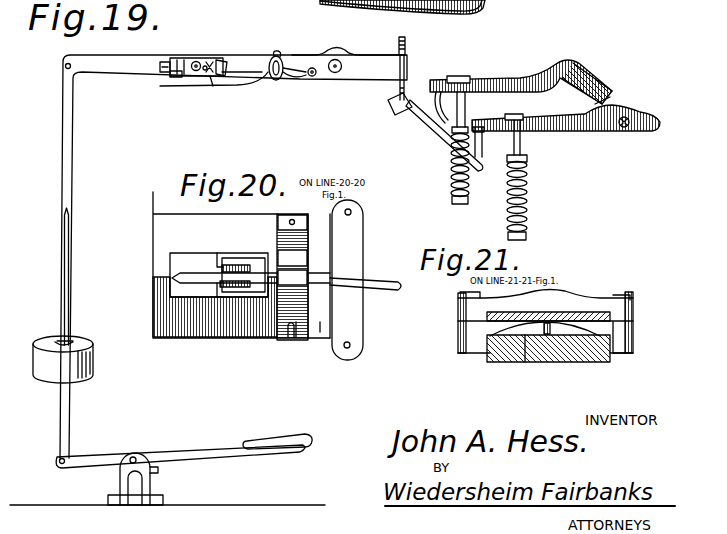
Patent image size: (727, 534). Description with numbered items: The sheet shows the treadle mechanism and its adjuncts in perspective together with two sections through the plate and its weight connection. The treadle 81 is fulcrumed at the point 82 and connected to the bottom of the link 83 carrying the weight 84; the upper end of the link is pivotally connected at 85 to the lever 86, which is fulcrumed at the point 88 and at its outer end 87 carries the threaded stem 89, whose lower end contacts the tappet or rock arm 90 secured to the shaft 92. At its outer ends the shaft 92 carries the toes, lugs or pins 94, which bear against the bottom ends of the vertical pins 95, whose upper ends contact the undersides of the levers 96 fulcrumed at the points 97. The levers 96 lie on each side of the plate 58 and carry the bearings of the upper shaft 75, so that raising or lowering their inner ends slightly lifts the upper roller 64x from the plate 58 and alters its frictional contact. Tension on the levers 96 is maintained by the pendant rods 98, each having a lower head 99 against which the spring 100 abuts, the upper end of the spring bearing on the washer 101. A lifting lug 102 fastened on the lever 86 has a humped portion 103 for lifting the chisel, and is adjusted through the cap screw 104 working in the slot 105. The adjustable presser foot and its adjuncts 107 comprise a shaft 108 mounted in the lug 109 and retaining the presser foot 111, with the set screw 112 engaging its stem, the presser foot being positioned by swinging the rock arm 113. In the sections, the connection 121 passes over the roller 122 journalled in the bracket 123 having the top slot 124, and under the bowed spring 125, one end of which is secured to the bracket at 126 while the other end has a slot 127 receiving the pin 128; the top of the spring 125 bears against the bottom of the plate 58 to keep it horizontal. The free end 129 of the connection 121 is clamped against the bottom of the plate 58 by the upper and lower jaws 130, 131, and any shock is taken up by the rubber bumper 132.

In FIG. 21, the plate 58 is at (587, 317).
In FIG. 19, the upper roller 64x is at (608, 97).
In FIG. 19, the upper shaft 75 is at (626, 128).
In FIG. 19, the treadle 81 is at (207, 438).
In FIG. 19, the fulcrum point 82 is at (140, 440).
In FIG. 19, the link 83 is at (62, 248).
In FIG. 19, the weight 84 is at (93, 355).
In FIG. 19, the pivotal connection 85 is at (63, 70).
In FIG. 19, the lever 86 is at (215, 60).
In FIG. 19, the outer end of lever 87 is at (400, 54).
In FIG. 19, the fulcrum point of lever 88 is at (337, 73).
In FIG. 19, the threaded stem 89 is at (407, 86).
In FIG. 19, the tappet or rock arm 90 is at (410, 106).
In FIG. 19, the shaft 92 is at (446, 140).
In FIG. 19, the toes, lugs or pins 94 is at (447, 150).
In FIG. 19, the vertical pins 95 is at (479, 62).
In FIG. 19, the levers 96 is at (537, 62).
In FIG. 19, the fulcrum points of levers 97 is at (603, 99).
In FIG. 19, the pendant rods 98 is at (466, 104).
In FIG. 19, the head 99 is at (452, 200).
In FIG. 19, the spring 100 is at (450, 180).
In FIG. 19, the washer 101 is at (528, 161).
In FIG. 19, the lifting lug 102 is at (313, 77).
In FIG. 19, the humped portion 103 is at (303, 56).
In FIG. 19, the cap screw 104 is at (291, 74).
In FIG. 19, the slot 105 is at (268, 80).
In FIG. 19, the adjustable presser foot and adjuncts 107 is at (170, 70).
In FIG. 19, the shaft 108 is at (212, 80).
In FIG. 19, the lug 109 is at (205, 78).
In FIG. 19, the presser foot 111 is at (219, 71).
In FIG. 19, the set screw 112 is at (226, 66).
In FIG. 19, the rock arm 113 is at (177, 58).
In FIG. 20, the connection 121 is at (178, 270).
In FIG. 21, the connection 121 is at (547, 337).
In FIG. 20, the roller 122 is at (172, 290).
In FIG. 20, the bracket 123 is at (241, 265).
In FIG. 21, the bracket 123 is at (583, 360).
In FIG. 20, the top slot 124 is at (262, 240).
In FIG. 20, the bowed spring 125 is at (303, 277).
In FIG. 21, the bowed spring 125 is at (527, 350).
In FIG. 21, the securing point 126 is at (632, 322).
In FIG. 20, the slot 127 is at (287, 337).
In FIG. 20, the pin 128 is at (300, 337).
In FIG. 21, the pin 128 is at (500, 330).
In FIG. 20, the free end of connection 129 is at (378, 290).
In FIG. 21, the upper jaw 130 is at (545, 306).
In FIG. 20, the lower jaw 131 is at (350, 243).
In FIG. 21, the lower jaw 131 is at (622, 350).
In FIG. 20, the rubber bumper 132 is at (322, 335).